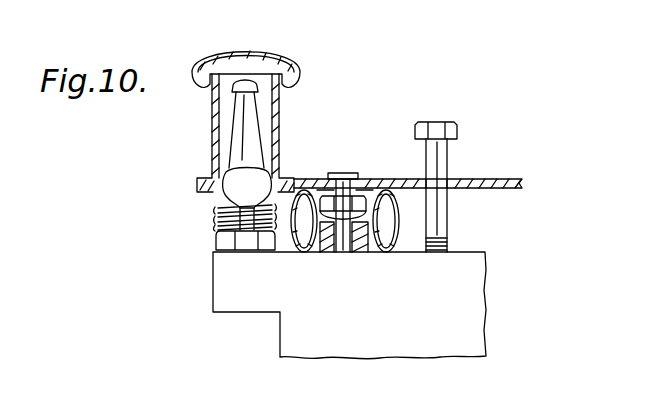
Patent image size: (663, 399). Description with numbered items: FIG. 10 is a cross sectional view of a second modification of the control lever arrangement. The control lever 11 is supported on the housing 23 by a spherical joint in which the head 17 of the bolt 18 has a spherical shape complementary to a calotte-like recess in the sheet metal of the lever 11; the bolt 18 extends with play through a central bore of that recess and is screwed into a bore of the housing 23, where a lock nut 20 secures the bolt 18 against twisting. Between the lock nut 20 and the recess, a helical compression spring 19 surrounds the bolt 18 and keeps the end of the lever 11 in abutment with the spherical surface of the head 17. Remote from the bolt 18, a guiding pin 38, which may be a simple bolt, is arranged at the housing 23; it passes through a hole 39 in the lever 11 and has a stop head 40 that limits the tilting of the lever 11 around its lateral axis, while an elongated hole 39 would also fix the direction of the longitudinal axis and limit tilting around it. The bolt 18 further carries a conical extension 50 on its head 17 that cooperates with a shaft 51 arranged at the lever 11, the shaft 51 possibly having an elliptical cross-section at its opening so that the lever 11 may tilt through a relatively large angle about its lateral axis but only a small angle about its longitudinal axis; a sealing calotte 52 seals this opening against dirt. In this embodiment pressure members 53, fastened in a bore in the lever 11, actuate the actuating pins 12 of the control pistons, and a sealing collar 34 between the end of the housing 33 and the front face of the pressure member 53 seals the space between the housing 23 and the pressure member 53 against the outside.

The control lever 11 is at (517, 179).
The actuating pins 12 is at (353, 247).
The head of bolt 17 is at (226, 172).
The bolt 18 is at (242, 247).
The helical compression spring 19 is at (218, 207).
The lock nut 20 is at (222, 242).
The housing 23 is at (480, 327).
The housing 33 is at (315, 179).
The sealing collar 34 is at (390, 197).
The guiding pin 38 is at (443, 225).
The hole 39 is at (453, 180).
The stop head 40 is at (437, 122).
The conical extension 50 is at (236, 117).
The shaft 51 is at (279, 117).
The sealing calotte 52 is at (248, 52).
The pressure members 53 is at (348, 173).